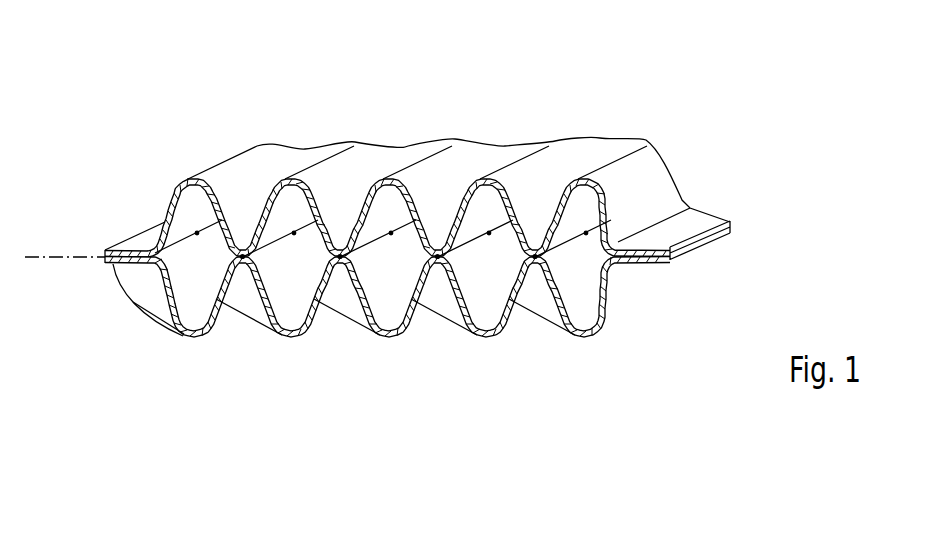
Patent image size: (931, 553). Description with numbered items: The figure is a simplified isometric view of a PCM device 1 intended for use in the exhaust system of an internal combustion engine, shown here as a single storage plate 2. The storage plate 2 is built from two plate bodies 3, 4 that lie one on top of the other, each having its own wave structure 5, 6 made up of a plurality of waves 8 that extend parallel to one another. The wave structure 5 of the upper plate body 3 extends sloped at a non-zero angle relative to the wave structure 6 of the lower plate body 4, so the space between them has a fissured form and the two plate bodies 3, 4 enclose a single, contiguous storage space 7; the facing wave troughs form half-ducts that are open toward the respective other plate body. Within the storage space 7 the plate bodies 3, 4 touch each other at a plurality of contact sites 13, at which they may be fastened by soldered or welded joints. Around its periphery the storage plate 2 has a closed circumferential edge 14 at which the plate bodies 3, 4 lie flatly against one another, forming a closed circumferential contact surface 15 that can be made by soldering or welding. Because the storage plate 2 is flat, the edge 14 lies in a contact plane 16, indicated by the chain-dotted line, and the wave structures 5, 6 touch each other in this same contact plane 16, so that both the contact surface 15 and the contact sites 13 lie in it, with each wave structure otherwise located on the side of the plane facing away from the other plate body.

The PCM device 1 is at (718, 127).
The storage plate 2 is at (596, 112).
The plate body 3 is at (224, 159).
The plate body 4 is at (133, 342).
The wave structure 5 is at (486, 143).
The wave structure 6 is at (340, 333).
The storage space 7 is at (483, 295).
The waves 8 is at (360, 160).
The contact sites 13 is at (297, 232).
The circumferential edge 14 is at (141, 240).
The contact surface 15 is at (114, 265).
The contact plane 16 is at (62, 257).